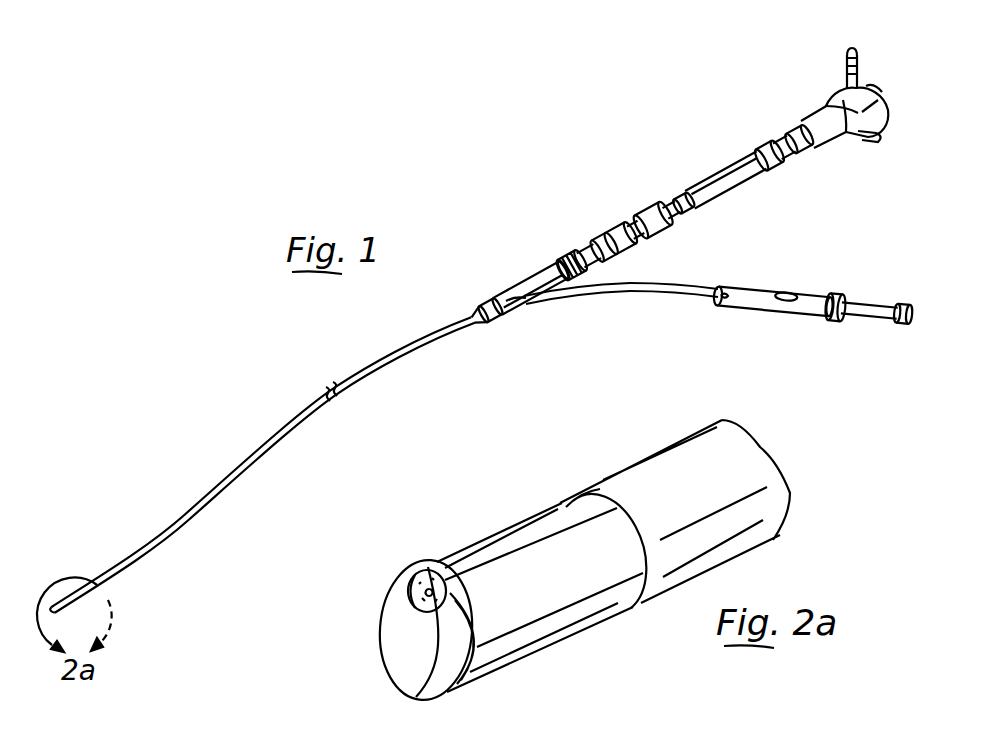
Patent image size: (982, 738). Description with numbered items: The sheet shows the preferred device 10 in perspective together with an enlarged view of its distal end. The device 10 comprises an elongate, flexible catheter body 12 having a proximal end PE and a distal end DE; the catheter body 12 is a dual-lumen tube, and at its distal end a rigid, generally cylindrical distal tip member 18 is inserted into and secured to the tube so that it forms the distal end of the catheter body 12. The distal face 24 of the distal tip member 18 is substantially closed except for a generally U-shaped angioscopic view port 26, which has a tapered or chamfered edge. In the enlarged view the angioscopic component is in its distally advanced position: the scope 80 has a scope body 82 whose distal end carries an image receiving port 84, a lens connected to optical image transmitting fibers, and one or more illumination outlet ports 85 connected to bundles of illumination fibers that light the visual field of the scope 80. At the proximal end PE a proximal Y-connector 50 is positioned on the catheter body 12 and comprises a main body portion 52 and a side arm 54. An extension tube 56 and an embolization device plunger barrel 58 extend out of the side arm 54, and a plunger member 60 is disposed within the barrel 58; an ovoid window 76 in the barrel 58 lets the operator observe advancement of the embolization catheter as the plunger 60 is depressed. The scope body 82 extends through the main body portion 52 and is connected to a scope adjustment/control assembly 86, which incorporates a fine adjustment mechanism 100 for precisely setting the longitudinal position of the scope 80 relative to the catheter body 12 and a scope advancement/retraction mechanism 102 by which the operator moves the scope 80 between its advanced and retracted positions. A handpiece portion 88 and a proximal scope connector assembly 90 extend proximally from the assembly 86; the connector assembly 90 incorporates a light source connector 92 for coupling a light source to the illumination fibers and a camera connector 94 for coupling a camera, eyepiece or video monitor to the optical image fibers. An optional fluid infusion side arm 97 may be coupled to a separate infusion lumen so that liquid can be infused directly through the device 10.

In FIG. 1, the device 10 is at (458, 243).
In FIG. 1, the catheter body 12 is at (350, 380).
In FIG. 1, the proximal end PE is at (470, 309).
In FIG. 1, the distal end DE is at (62, 604).
In FIG. 1, the proximal Y-connector 50 is at (512, 302).
In FIG. 1, the main body portion 52 is at (532, 273).
In FIG. 1, the side arm 54 is at (548, 298).
In FIG. 1, the extension tube 56 is at (680, 290).
In FIG. 1, the embolization device plunger barrel 58 is at (750, 285).
In FIG. 1, the plunger member 60 is at (862, 317).
In FIG. 1, the ovoid window 76 is at (793, 292).
In FIG. 1, the scope adjustment/control assembly 86 is at (637, 270).
In FIG. 1, the handpiece portion 88 is at (745, 163).
In FIG. 1, the proximal scope connector assembly 90 is at (838, 103).
In FIG. 1, the light source connector 92 is at (846, 62).
In FIG. 1, the camera connector 94 is at (880, 86).
In FIG. 1, the fluid infusion side arm 97 is at (864, 139).
In FIG. 1, the fine adjustment mechanism 100 is at (570, 253).
In FIG. 1, the scope advancement/retraction mechanism 102 is at (630, 220).
In FIG. 2A, the distal tip member 18 is at (583, 604).
In FIG. 2A, the distal face 24 is at (400, 637).
In FIG. 2A, the angioscopic view port 26 is at (408, 580).
In FIG. 2A, the scope 80 is at (547, 510).
In FIG. 2A, the scope body 82 is at (528, 527).
In FIG. 2A, the image receiving port 84 is at (430, 570).
In FIG. 2A, the illumination outlet ports 85 is at (420, 692).